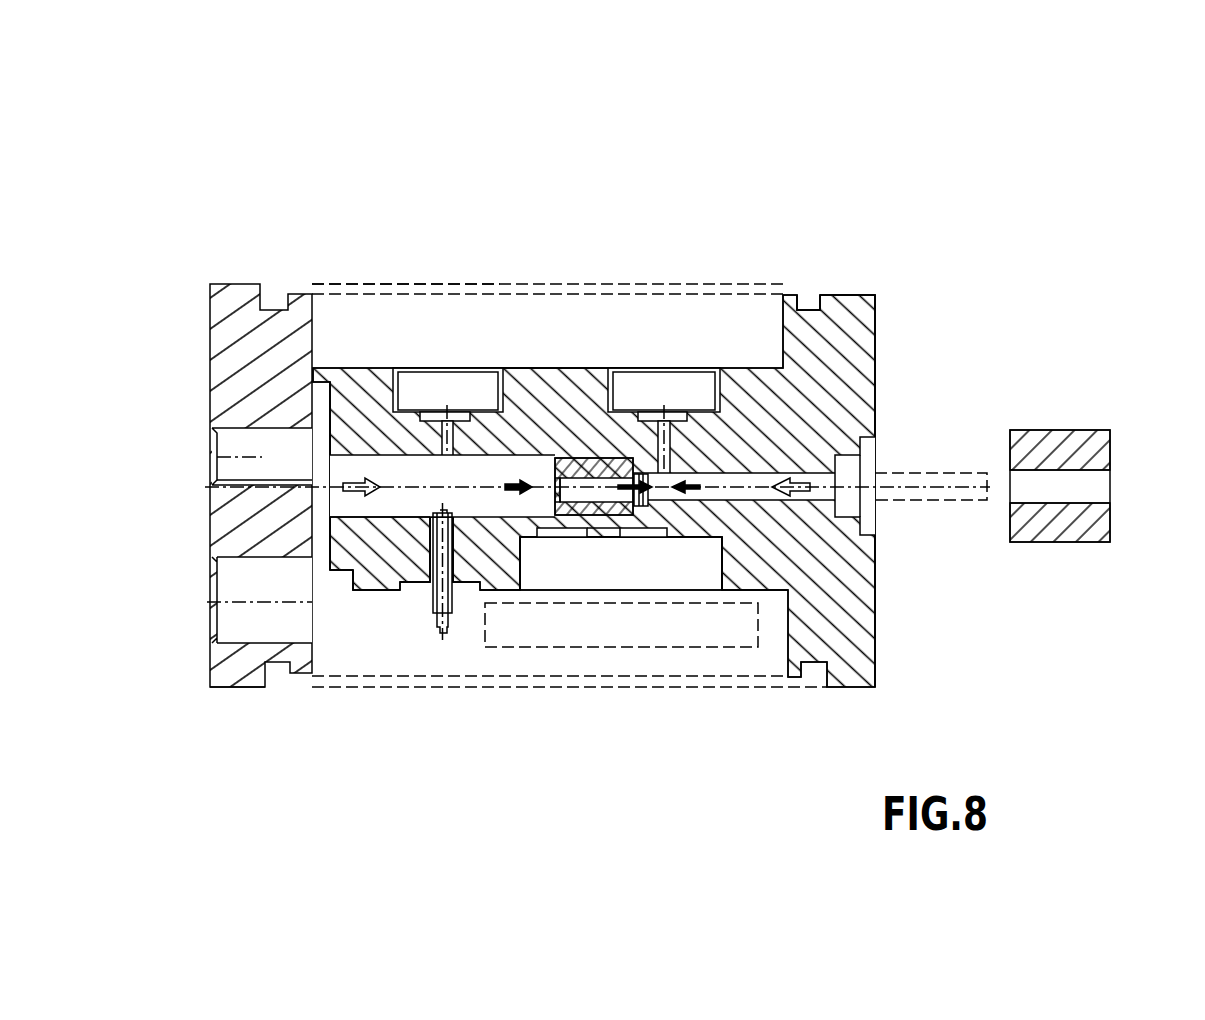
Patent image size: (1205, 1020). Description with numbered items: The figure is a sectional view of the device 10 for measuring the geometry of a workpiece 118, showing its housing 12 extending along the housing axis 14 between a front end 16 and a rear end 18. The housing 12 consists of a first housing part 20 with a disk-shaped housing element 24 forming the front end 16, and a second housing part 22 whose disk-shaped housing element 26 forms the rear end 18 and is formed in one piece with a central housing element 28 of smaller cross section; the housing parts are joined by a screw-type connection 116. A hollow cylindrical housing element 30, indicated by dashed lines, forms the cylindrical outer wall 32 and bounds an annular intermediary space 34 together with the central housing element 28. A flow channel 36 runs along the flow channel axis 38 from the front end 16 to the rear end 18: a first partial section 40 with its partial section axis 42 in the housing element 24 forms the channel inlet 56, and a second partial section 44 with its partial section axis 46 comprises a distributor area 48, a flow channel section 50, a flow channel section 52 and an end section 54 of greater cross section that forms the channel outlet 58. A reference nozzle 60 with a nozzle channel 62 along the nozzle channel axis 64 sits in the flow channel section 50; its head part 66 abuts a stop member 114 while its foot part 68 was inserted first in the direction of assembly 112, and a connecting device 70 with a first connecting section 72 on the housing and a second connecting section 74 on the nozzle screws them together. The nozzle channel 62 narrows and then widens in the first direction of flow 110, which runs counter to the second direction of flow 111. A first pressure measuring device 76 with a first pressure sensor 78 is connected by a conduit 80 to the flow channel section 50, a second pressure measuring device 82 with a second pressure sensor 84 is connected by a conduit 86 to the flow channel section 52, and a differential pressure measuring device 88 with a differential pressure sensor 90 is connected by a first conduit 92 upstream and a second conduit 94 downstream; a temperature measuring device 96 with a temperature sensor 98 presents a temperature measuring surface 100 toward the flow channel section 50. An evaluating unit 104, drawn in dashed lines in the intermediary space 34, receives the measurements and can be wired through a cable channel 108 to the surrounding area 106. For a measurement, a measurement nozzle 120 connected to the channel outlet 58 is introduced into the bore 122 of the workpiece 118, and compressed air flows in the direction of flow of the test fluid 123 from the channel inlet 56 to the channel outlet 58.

The device for measuring the geometry of a workpiece 10 is at (457, 147).
The housing 12 is at (757, 165).
The housing axis 14 is at (917, 473).
The front end 16 is at (205, 397).
The rear end 18 is at (880, 325).
The first housing part 20 is at (243, 700).
The second housing part 22 is at (777, 640).
The housing element 24 is at (228, 327).
The housing element 26 is at (853, 308).
The central housing element 28 is at (540, 375).
The hollow cylindrical housing element 30 is at (318, 283).
The cylindrical outer wall 32 is at (343, 280).
The annular intermediary space 34 is at (457, 345).
The flow channel 36 is at (398, 507).
The flow channel axis 38 is at (245, 487).
The first partial section 40 is at (230, 452).
The partial section axis 42 is at (245, 442).
The second partial section 44 is at (457, 578).
The partial section axis 46 is at (420, 498).
The distributor area 48 is at (342, 510).
The flow channel section 50 is at (378, 470).
The flow channel section 52 is at (768, 478).
The end section 54 is at (887, 527).
The channel inlet 56 is at (205, 473).
The channel outlet 58 is at (884, 452).
The reference nozzle 60 is at (586, 445).
The nozzle channel 62 is at (603, 485).
The nozzle channel axis 64 is at (487, 540).
The head part 66 is at (578, 450).
The foot part 68 is at (664, 445).
The connecting device 70 is at (600, 512).
The first connecting section 72 is at (637, 495).
The second connecting section 74 is at (640, 495).
The first pressure measuring device 76 is at (438, 372).
The first pressure sensor 78 is at (483, 398).
The conduit 80 is at (472, 412).
The second pressure measuring device 82 is at (682, 372).
The second pressure sensor 84 is at (693, 350).
The conduit 86 is at (672, 448).
The differential pressure measuring device 88 is at (645, 595).
The differential pressure sensor 90 is at (700, 582).
The first conduit 92 is at (550, 525).
The second conduit 94 is at (720, 520).
The temperature measuring device 96 is at (434, 652).
The temperature sensor 98 is at (437, 618).
The temperature measuring surface 100 is at (446, 510).
The evaluating unit 104 is at (623, 627).
The surrounding area 106 is at (86, 714).
The cable channel 108 is at (240, 615).
The first direction of flow 110 is at (648, 502).
The second direction of flow 111 is at (727, 533).
The direction of assembly 112 is at (360, 485).
The stop member 114 is at (592, 512).
The screw-type connection 116 is at (798, 475).
The workpiece 118 is at (1093, 418).
The measurement nozzle 120 is at (982, 523).
The bore 122 is at (1097, 493).
The direction of flow of the test fluid 123 is at (516, 480).